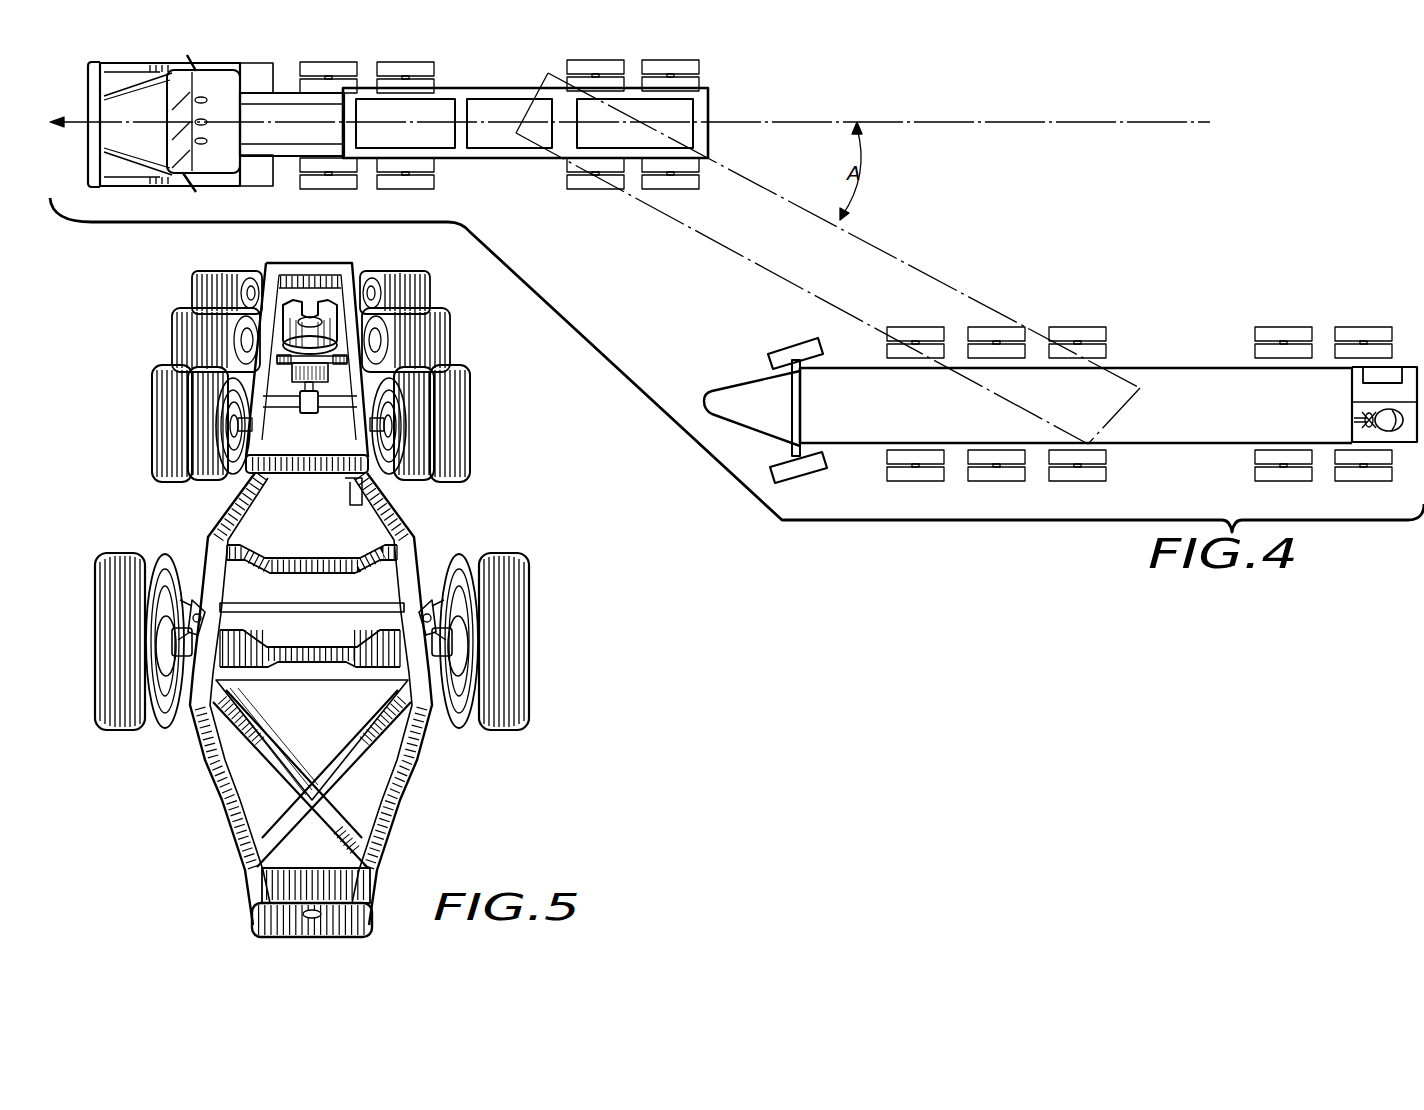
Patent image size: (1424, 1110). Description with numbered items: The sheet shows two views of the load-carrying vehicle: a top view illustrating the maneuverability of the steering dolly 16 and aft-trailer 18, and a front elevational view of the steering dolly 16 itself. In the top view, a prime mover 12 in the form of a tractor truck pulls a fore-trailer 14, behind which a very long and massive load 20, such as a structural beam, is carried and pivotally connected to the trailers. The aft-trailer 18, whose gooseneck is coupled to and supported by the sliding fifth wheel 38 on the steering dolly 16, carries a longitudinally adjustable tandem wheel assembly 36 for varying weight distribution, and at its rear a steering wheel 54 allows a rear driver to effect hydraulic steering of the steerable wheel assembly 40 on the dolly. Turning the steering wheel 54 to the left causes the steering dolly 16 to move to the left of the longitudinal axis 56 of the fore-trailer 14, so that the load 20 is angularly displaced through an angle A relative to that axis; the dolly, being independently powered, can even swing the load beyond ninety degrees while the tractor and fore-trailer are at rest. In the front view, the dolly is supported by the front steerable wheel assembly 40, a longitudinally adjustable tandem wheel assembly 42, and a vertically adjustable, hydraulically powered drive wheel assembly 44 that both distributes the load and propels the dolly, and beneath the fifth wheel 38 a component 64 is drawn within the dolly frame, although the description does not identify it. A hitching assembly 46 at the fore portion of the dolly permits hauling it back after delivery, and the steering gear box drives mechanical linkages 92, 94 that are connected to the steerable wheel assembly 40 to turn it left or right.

In FIG. 4, the prime mover 12 is at (182, 54).
In FIG. 4, the fore-trailer 14 is at (474, 74).
In FIG. 4, the steering dolly 16 is at (846, 458).
In FIG. 5, the steering dolly 16 is at (440, 745).
In FIG. 4, the aft-trailer 18 is at (1190, 355).
In FIG. 4, the load 20 is at (922, 258).
In FIG. 4, the tandem wheel assembly 36 is at (1323, 492).
In FIG. 5, the sliding fifth wheel 38 is at (313, 323).
In FIG. 4, the steerable wheel assembly 40 is at (786, 330).
In FIG. 5, the steerable wheel assembly 40 is at (140, 740).
In FIG. 4, the tandem wheel assembly 42 is at (1040, 492).
In FIG. 5, the tandem wheel assembly 42 is at (170, 300).
In FIG. 4, the drive wheel assembly 44 is at (927, 492).
In FIG. 5, the drive wheel assembly 44 is at (142, 412).
In FIG. 5, the hitching assembly 46 is at (258, 905).
In FIG. 4, the steering wheel 54 is at (1353, 418).
In FIG. 4, the longitudinal axis 56 is at (646, 115).
In FIG. 5, the steering linkage 64 is at (310, 413).
In FIG. 5, the mechanical linkage 92 is at (190, 605).
In FIG. 5, the mechanical linkage 94 is at (432, 605).